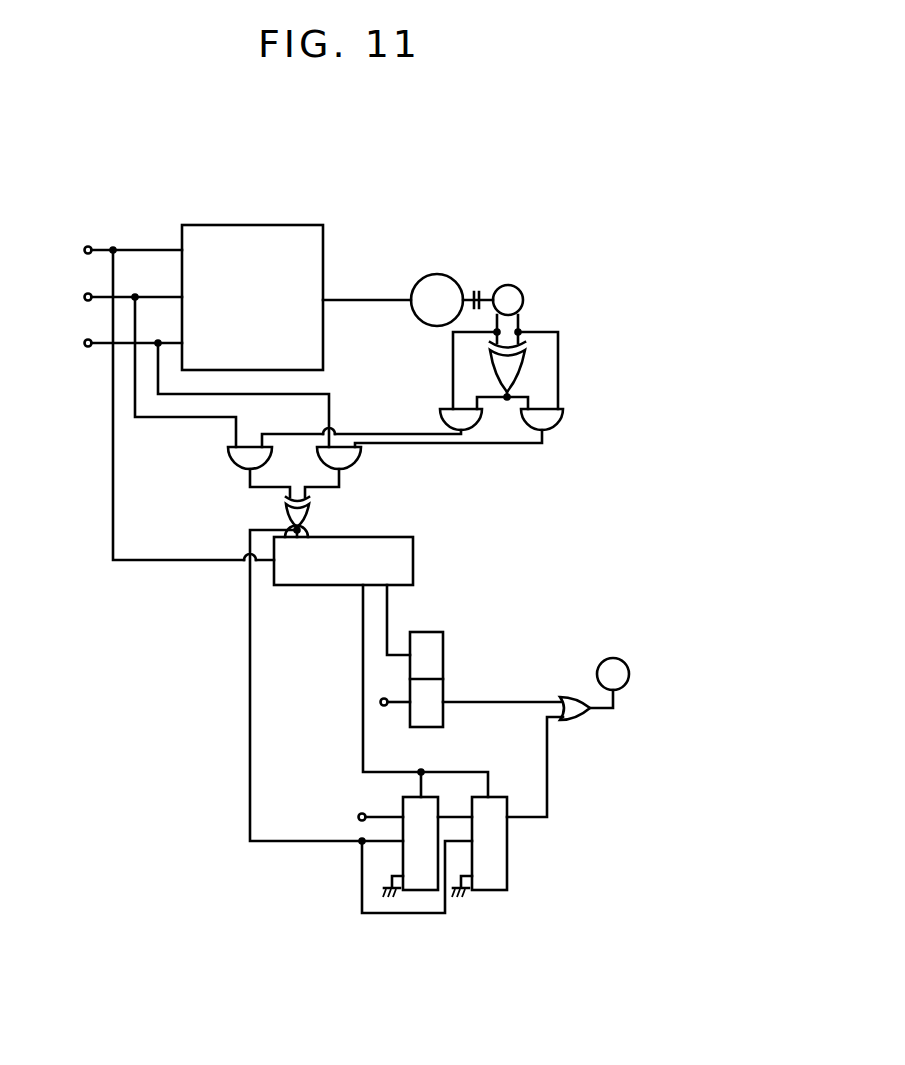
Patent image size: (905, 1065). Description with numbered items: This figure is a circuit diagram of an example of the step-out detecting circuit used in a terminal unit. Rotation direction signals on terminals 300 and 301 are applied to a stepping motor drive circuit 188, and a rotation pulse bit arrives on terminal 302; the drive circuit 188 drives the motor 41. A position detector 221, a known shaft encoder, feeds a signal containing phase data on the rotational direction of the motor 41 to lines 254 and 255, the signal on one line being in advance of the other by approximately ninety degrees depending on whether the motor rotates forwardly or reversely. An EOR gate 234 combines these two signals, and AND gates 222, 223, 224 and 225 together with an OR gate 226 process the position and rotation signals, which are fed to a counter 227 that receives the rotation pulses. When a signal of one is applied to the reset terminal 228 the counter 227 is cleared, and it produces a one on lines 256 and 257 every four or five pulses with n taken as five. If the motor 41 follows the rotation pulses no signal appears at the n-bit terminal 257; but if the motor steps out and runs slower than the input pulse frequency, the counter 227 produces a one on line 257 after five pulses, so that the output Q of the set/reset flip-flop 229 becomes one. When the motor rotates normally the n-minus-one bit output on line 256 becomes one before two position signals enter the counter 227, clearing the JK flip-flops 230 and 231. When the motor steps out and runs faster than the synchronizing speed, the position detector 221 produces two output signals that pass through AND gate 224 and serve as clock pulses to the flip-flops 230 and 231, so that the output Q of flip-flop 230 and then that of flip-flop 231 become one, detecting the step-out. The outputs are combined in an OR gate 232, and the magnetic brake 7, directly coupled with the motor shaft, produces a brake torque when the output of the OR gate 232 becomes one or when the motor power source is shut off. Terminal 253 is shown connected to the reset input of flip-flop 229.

The stepping motor drive circuit 188 is at (248, 225).
The terminal 302 is at (84, 247).
The terminal 300 is at (84, 296).
The terminal 301 is at (84, 343).
The motor 41 is at (424, 276).
The position detector 221 is at (503, 285).
The line 254 is at (453, 357).
The line 255 is at (558, 348).
The EOR gate 234 is at (520, 375).
The AND gate 222 is at (440, 414).
The AND gate 223 is at (548, 428).
The AND gate 224 is at (228, 462).
The AND gate 225 is at (355, 465).
The OR gate 226 is at (286, 512).
The counter 227 is at (413, 550).
The reset terminal 228 is at (302, 548).
The n-bit terminal 257 is at (387, 617).
The line 256 is at (363, 627).
The set/reset flip-flop 229 is at (443, 648).
The reset terminal 253 is at (384, 706).
The OR gate 232 is at (568, 697).
The magnetic brake 7 is at (613, 658).
The JK flip-flop 230 is at (403, 805).
The JK flip-flop 231 is at (498, 890).